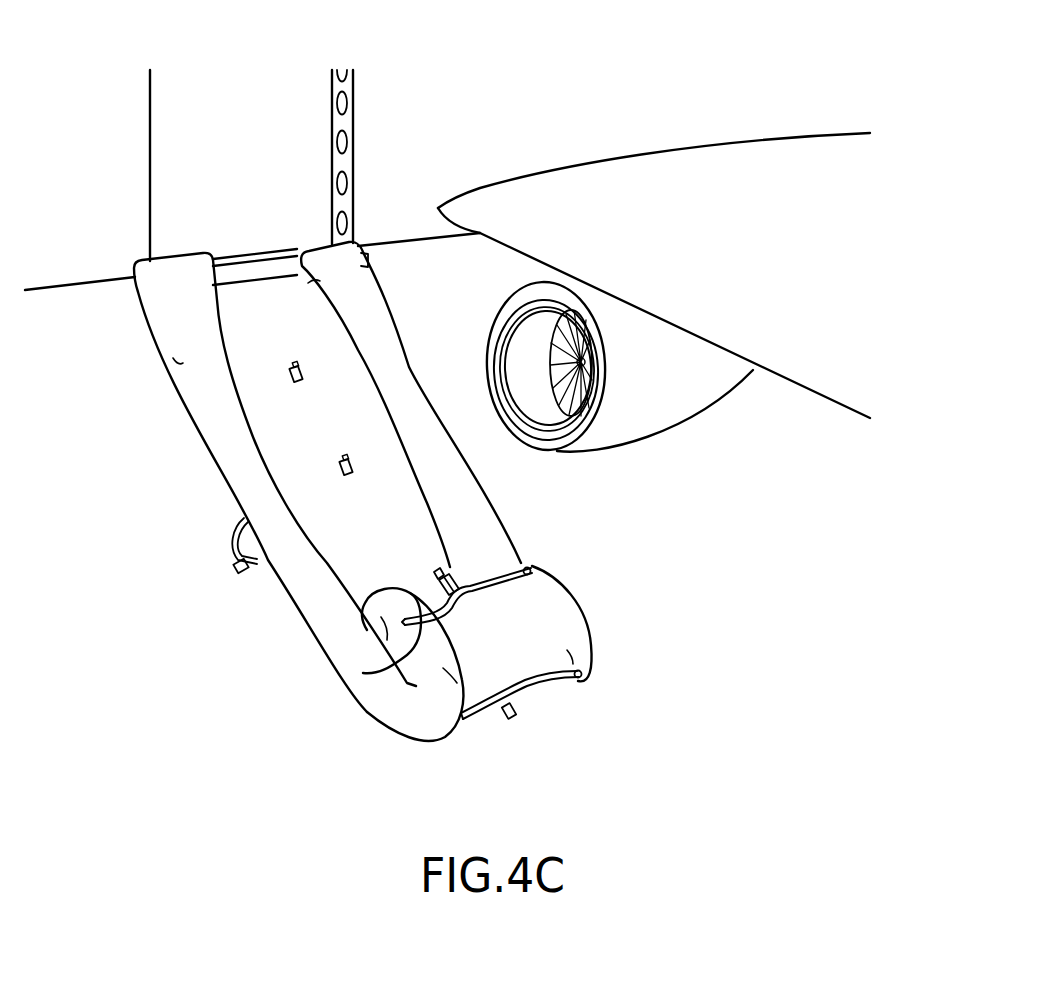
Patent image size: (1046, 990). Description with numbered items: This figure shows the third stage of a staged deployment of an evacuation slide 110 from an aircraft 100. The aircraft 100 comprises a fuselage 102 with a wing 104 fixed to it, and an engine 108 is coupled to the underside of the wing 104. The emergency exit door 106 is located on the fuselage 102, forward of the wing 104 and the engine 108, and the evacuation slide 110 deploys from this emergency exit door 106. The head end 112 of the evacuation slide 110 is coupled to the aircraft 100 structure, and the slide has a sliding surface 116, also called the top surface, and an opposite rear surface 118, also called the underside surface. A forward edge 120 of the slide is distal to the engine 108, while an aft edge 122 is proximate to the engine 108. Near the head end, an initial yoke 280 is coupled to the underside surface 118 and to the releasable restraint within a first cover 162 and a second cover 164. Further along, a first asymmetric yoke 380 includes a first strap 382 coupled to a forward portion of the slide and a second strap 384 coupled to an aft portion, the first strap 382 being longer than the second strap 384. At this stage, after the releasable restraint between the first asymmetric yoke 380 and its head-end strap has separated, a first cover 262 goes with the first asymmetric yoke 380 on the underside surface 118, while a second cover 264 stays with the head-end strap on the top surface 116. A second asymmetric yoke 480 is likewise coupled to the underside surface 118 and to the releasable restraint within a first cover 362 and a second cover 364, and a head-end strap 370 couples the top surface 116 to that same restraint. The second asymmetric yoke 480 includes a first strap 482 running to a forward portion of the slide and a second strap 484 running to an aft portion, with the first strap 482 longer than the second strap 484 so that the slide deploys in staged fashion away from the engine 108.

The aircraft 100 is at (87, 268).
The fuselage 102 is at (100, 158).
The wing 104 is at (732, 268).
The emergency exit door 106 is at (262, 150).
The engine 108 is at (654, 423).
The evacuation slide 110 is at (228, 256).
The head end 112 is at (258, 287).
The sliding surface 116 is at (308, 332).
The rear surface 118 is at (524, 670).
The forward edge 120 is at (203, 436).
The aft edge 122 is at (414, 392).
The first cover 162 is at (238, 562).
The second cover 164 is at (292, 370).
The first cover 262 is at (509, 718).
The second cover 264 is at (342, 460).
The initial yoke 280 is at (228, 529).
The first cover 362 is at (437, 580).
The second cover 364 is at (449, 584).
The head-end strap 370 is at (440, 568).
The first asymmetric yoke 380 is at (541, 740).
The first strap 382 is at (466, 720).
The second strap 384 is at (565, 683).
The second asymmetric yoke 480 is at (480, 605).
The first strap 482 is at (363, 673).
The second strap 484 is at (510, 568).